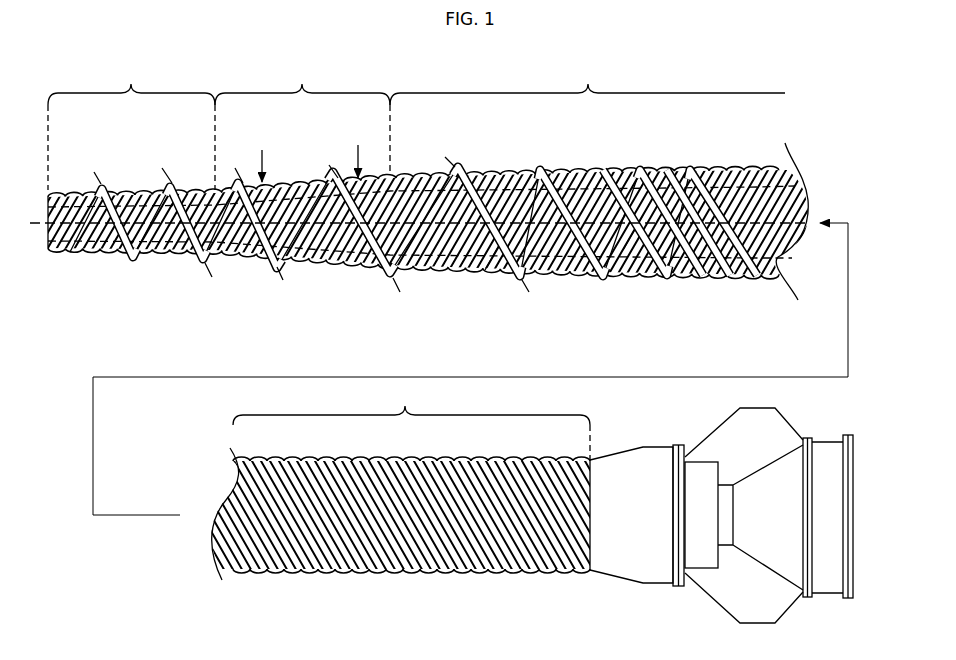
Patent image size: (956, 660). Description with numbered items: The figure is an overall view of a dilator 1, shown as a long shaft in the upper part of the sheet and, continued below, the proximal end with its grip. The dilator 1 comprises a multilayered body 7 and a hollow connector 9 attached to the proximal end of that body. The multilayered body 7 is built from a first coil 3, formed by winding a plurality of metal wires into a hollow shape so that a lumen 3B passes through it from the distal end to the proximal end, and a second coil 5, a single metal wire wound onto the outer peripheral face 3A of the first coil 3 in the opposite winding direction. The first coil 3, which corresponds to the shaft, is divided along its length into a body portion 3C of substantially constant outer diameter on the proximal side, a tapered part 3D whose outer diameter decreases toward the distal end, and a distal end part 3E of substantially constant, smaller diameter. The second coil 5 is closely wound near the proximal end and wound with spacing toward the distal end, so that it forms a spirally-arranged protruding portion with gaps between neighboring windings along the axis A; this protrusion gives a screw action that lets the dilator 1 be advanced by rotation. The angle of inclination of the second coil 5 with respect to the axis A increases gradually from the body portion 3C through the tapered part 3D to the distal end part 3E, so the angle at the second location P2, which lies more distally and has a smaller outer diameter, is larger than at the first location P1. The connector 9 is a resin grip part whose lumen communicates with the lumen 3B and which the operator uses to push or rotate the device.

The dilator 1 is at (818, 112).
The first coil 3 is at (572, 178).
The outer peripheral face 3A is at (487, 268).
The lumen 3B is at (623, 250).
The body portion 3C is at (467, 319).
The tapered part 3D is at (302, 117).
The distal end part 3E is at (131, 124).
The second coil 5 is at (400, 277).
The multilayered body 7 is at (765, 146).
The connector 9 is at (682, 598).
The axis A is at (45, 232).
The first location P1 is at (358, 148).
The second location P2 is at (262, 154).